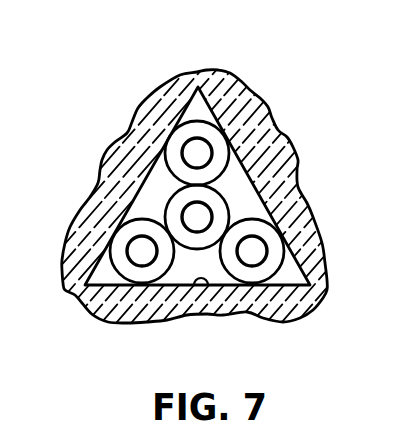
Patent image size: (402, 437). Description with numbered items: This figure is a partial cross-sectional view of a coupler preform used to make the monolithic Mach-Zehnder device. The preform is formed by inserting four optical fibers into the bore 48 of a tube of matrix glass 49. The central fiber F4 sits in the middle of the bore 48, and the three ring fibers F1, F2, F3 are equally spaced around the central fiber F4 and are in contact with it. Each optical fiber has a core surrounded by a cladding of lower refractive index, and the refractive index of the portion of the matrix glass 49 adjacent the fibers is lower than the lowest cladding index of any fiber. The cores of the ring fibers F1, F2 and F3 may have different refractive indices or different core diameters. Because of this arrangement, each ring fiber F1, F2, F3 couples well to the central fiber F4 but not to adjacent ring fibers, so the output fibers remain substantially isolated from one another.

The tube of matrix glass 49 is at (227, 74).
The bore 48 is at (205, 285).
The optical fiber F1 is at (163, 226).
The optical fiber F2 is at (258, 220).
The optical fiber F3 is at (228, 166).
The central optical fiber F4 is at (174, 195).